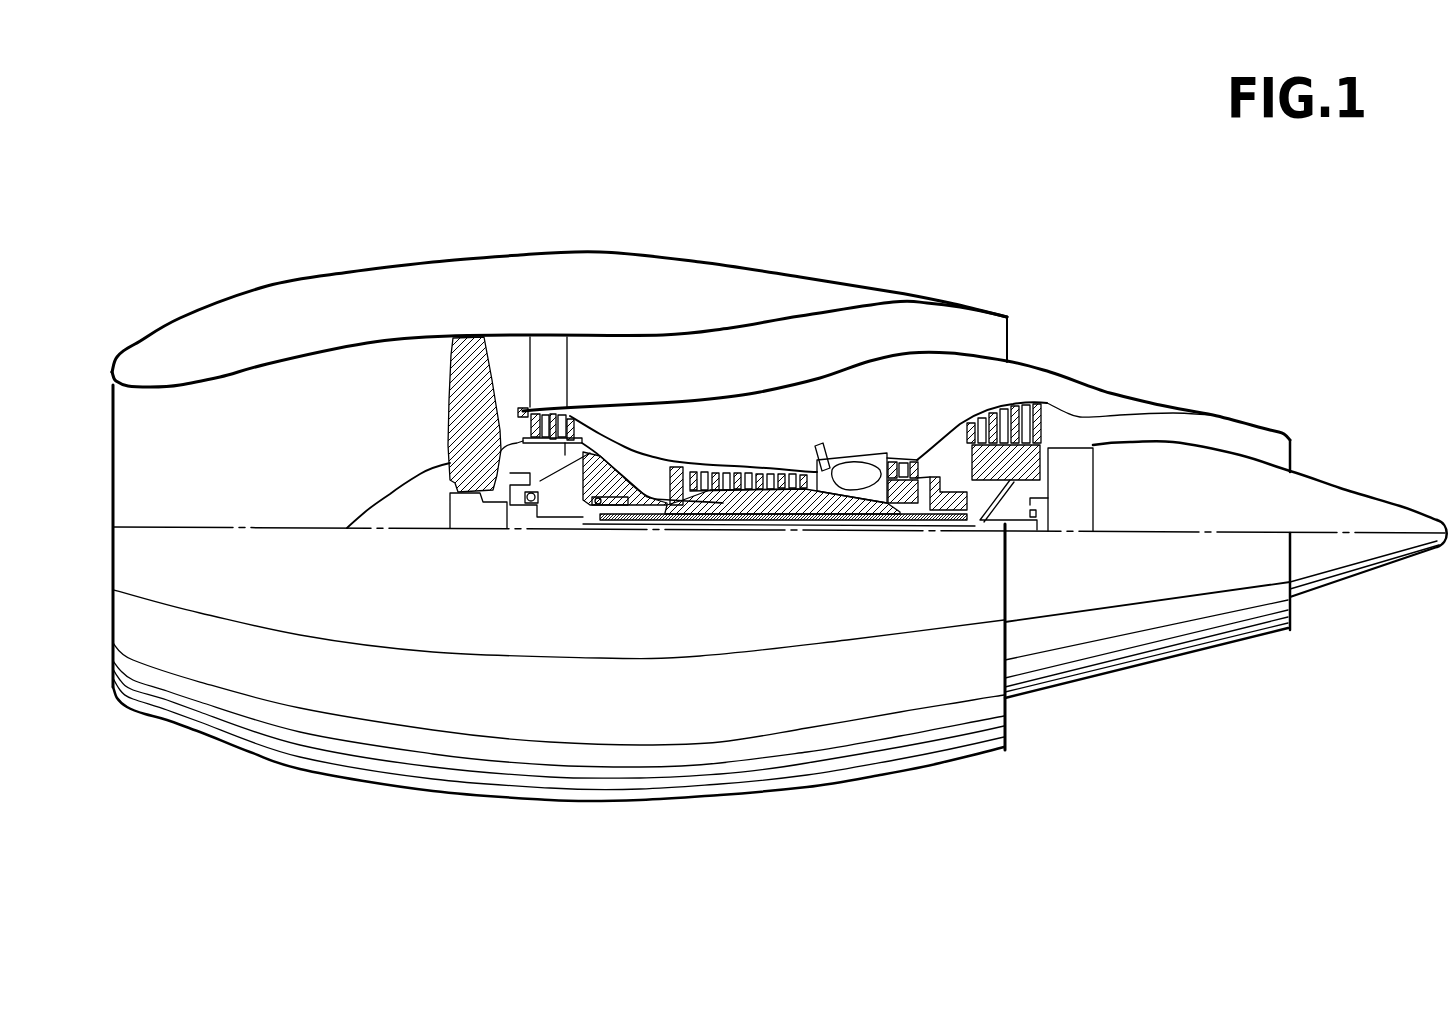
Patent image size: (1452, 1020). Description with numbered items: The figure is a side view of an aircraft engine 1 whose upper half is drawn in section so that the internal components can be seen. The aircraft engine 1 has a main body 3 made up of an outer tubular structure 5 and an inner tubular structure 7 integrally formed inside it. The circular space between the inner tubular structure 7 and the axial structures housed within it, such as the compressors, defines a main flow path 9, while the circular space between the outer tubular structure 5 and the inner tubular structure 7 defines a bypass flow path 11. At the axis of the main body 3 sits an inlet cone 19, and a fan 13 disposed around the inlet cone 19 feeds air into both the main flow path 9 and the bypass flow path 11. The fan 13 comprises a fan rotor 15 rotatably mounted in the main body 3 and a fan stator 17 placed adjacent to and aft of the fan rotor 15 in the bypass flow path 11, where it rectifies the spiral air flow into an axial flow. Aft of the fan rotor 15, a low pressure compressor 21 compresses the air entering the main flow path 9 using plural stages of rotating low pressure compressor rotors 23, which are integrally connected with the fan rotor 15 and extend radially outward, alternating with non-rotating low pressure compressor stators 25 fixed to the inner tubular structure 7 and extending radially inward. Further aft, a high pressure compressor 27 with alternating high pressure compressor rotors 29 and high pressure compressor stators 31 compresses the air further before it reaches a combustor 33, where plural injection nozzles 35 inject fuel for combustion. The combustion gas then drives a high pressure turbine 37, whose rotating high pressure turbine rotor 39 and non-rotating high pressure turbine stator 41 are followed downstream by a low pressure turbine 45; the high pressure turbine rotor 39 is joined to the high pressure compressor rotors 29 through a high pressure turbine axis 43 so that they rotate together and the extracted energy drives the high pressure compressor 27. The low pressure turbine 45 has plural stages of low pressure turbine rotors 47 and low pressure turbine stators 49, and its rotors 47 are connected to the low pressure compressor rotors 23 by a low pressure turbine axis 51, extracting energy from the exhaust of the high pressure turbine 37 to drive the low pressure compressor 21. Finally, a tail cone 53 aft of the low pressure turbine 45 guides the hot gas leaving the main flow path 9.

The aircraft engine 1 is at (779, 461).
The main body 3 is at (701, 461).
The outer tubular structure 5 is at (749, 258).
The inner tubular structure 7 is at (776, 380).
The main flow path 9 is at (614, 470).
The bypass flow path 11 is at (683, 350).
The fan 13 is at (396, 420).
The fan rotor 15 is at (455, 338).
The fan stator 17 is at (546, 360).
The inlet cone 19 is at (378, 498).
The low pressure compressor 21 is at (578, 412).
The low pressure compressor rotors 23 is at (526, 410).
The low pressure compressor stators 25 is at (622, 411).
The high pressure compressor 27 is at (726, 458).
The high pressure compressor rotors 29 is at (770, 478).
The high pressure compressor stators 31 is at (705, 470).
The combustor 33 is at (875, 444).
The injection nozzles 35 is at (825, 462).
The high pressure turbine 37 is at (903, 450).
The high pressure turbine rotor 39 is at (892, 452).
The high pressure turbine stator 41 is at (913, 456).
The high pressure turbine axis 43 is at (796, 490).
The low pressure turbine 45 is at (1022, 378).
The low pressure turbine rotors 47 is at (983, 423).
The low pressure turbine stators 49 is at (1025, 405).
The low pressure turbine axis 51 is at (772, 527).
The tail cone 53 is at (1372, 496).